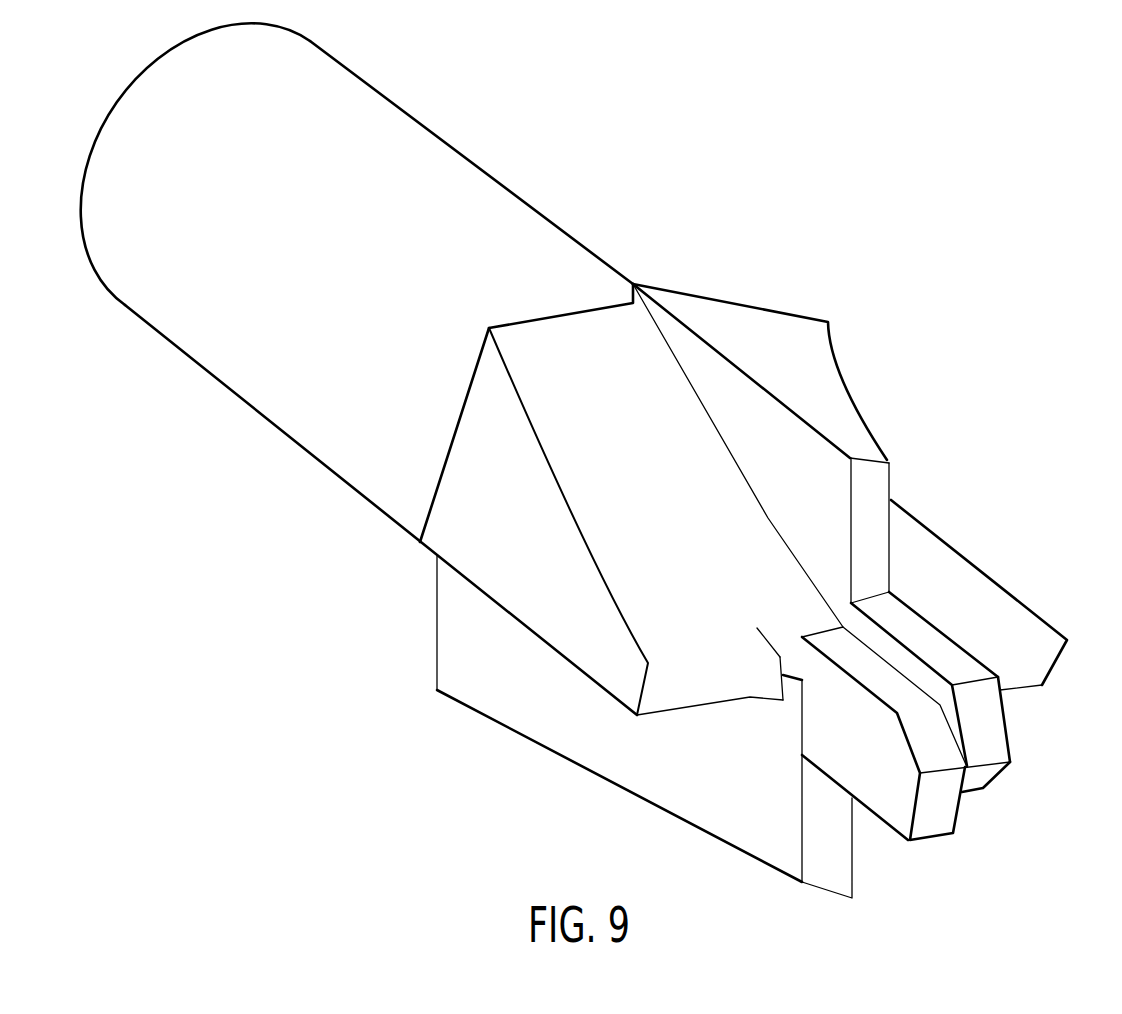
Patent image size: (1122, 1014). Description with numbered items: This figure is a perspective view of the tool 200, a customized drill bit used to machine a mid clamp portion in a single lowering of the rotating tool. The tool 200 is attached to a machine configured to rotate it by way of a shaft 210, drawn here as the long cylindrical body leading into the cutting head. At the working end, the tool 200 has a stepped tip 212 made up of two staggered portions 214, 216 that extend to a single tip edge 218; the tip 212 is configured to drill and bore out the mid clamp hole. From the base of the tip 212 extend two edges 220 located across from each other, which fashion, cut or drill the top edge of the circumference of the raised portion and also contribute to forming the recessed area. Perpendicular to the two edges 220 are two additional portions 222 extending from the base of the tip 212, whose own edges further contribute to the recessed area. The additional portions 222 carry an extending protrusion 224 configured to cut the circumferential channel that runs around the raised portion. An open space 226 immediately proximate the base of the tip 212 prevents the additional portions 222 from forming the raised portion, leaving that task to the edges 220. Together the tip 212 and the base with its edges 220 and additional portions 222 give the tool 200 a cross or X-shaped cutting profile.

The tool 200 is at (658, 183).
The shaft 210 is at (395, 120).
The tip 212 is at (945, 653).
The staggered portion 214 is at (998, 730).
The staggered portion 216 is at (898, 800).
The tip edge 218 is at (967, 775).
The edge 220 is at (892, 520).
The additional portion 222 is at (692, 707).
The extending protrusion 224 is at (783, 702).
The open space 226 is at (783, 653).